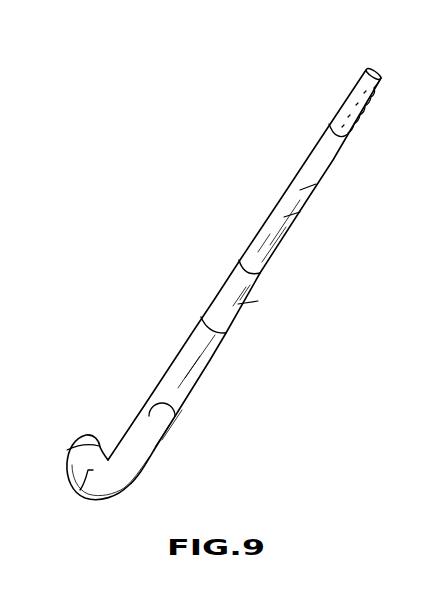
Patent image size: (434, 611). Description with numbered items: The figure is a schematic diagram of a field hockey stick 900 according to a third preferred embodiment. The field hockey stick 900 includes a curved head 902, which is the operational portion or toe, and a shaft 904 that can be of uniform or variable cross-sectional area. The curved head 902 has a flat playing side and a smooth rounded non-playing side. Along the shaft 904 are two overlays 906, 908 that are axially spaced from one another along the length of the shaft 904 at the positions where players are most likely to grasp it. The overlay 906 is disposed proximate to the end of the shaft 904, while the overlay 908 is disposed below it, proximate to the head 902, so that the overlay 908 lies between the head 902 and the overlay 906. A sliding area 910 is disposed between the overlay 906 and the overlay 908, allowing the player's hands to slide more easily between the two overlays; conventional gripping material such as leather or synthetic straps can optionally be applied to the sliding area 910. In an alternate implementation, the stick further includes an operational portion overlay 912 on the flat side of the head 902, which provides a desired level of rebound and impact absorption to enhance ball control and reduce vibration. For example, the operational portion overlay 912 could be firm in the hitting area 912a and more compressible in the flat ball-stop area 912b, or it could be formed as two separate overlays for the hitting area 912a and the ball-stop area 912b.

The field hockey stick 900 is at (160, 330).
The curved head 902 is at (108, 501).
The shaft 904 is at (303, 191).
The overlay 906 is at (344, 102).
The overlay 908 is at (244, 303).
The sliding area 910 is at (284, 217).
The operational portion overlay 912 is at (153, 443).
The hitting area 912a is at (80, 490).
The flat ball-stop area 912b is at (158, 417).